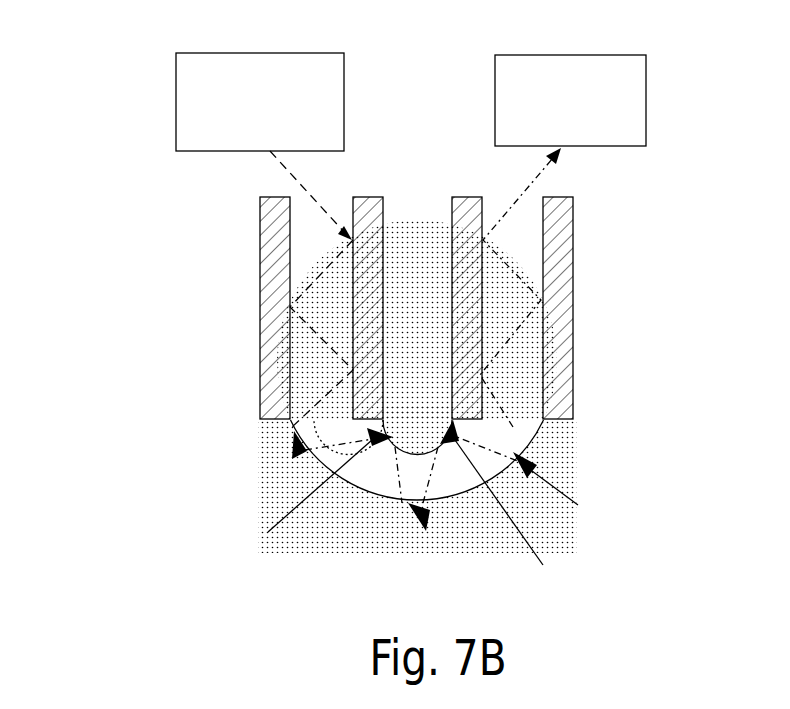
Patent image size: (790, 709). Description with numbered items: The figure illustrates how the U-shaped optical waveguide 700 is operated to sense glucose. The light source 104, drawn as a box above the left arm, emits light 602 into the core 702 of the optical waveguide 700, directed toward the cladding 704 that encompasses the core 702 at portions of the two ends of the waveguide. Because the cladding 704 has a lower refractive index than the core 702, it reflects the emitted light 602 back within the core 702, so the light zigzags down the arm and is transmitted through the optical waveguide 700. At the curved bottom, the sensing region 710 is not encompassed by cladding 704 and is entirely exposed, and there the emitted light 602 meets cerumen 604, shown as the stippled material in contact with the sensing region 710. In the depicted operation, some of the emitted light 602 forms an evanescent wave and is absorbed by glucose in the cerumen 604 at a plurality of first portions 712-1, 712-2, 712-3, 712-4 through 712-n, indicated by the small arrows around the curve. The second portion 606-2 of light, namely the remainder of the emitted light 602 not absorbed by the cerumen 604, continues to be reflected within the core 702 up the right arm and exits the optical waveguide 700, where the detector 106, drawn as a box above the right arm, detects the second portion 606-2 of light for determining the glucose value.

The optical waveguide 700 is at (104, 163).
The light source 104 is at (260, 102).
The detector 106 is at (570, 100).
The emitted light 602 is at (290, 178).
The second portion of light 606-2 is at (535, 180).
The cerumen 604 is at (578, 440).
The core 702 is at (516, 364).
The cladding 704 is at (573, 250).
The sensing region 710 is at (357, 497).
The first portion 712-1 is at (292, 453).
The first portion 712-2 is at (268, 532).
The first portion 712-3 is at (420, 528).
The first portion 712-4 is at (543, 565).
The first portion 712-n is at (578, 505).